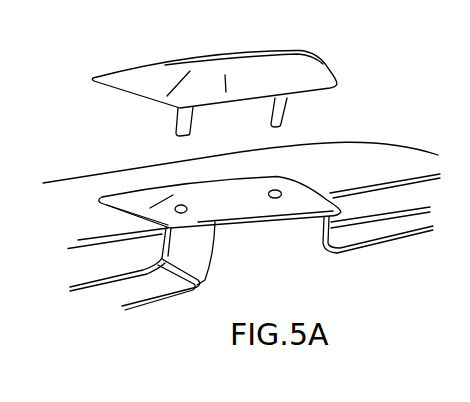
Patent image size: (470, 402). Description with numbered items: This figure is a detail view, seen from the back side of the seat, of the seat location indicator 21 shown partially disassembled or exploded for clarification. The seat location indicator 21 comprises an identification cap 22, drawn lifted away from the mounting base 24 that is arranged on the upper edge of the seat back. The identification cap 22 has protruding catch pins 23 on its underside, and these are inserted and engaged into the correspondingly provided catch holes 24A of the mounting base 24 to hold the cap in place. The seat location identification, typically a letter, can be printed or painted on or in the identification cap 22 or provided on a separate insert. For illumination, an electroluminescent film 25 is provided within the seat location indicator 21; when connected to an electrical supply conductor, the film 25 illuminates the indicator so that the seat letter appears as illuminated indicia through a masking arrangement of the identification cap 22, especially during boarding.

The seat location indicator 21 is at (104, 112).
The identification cap 22 is at (315, 65).
The catch pins 23 is at (282, 118).
The mounting base 24 is at (253, 200).
The catch holes 24A is at (280, 198).
The electroluminescent film 25 is at (200, 190).